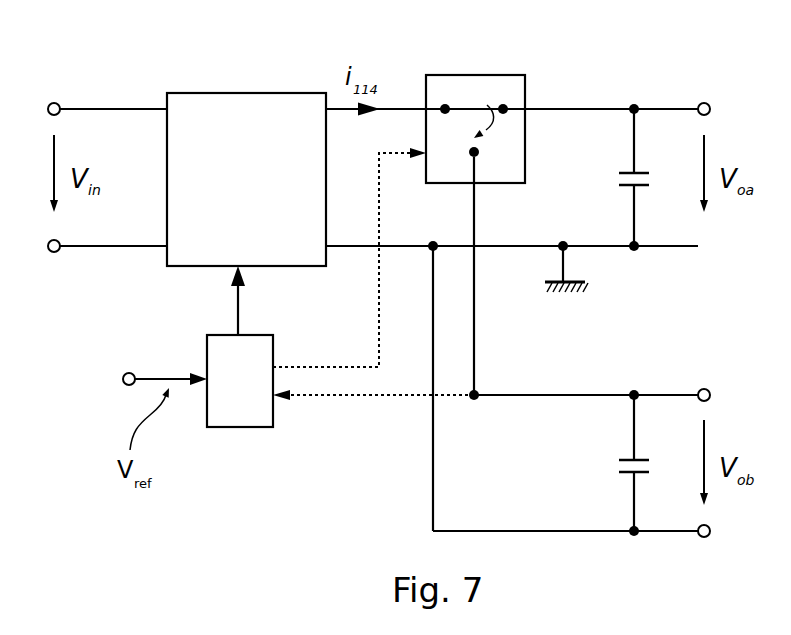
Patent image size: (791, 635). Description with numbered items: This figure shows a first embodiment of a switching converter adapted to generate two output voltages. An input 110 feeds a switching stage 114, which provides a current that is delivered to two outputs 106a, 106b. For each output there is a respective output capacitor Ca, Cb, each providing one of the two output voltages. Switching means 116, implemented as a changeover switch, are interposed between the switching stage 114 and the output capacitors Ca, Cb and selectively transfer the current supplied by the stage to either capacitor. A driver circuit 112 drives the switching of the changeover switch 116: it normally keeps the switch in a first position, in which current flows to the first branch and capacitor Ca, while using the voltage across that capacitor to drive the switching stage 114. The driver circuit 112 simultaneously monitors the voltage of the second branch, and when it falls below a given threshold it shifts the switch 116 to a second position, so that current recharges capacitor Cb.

The input terminals 110 is at (62, 94).
The switching stage 114 is at (186, 87).
The switching means 116 is at (450, 68).
The driver circuit 112 is at (241, 415).
The output 106a is at (698, 80).
The output 106b is at (698, 362).
The output capacitor Ca is at (617, 165).
The output capacitor Cb is at (617, 452).